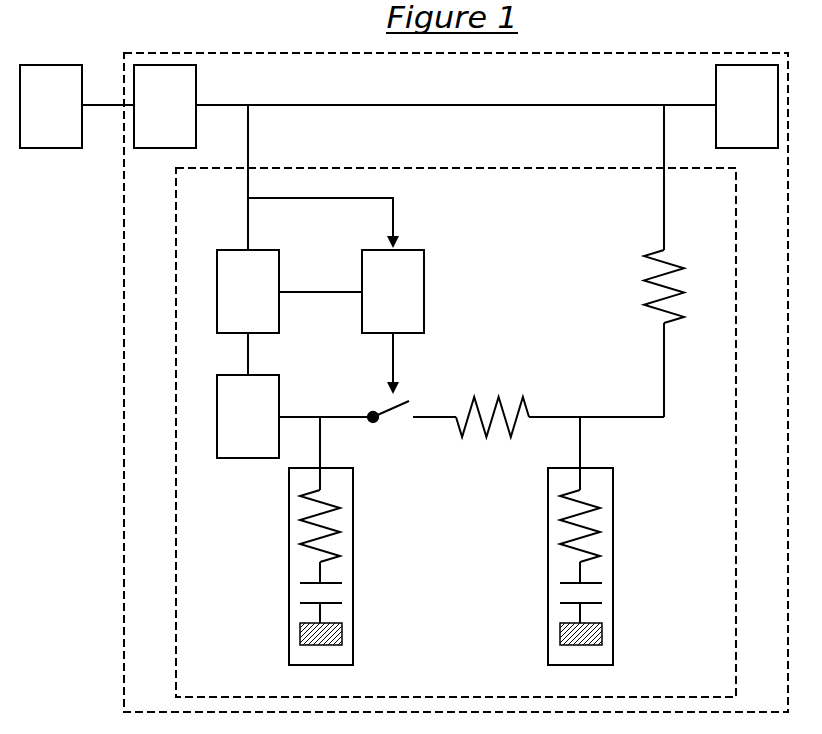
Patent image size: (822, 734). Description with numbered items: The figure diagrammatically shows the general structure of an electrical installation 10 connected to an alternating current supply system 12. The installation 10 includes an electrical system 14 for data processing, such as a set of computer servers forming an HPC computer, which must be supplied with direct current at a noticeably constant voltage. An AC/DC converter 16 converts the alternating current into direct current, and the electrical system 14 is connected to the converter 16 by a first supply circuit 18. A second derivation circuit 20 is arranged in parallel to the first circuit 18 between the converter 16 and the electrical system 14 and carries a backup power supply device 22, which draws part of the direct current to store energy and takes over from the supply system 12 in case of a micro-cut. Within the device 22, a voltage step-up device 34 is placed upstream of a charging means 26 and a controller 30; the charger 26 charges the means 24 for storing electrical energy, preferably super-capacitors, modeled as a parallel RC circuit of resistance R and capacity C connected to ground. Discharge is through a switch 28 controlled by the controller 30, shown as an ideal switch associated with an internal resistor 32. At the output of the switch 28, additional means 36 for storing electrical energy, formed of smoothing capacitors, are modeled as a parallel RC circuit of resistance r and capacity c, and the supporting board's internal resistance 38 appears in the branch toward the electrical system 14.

The electrical installation 10 is at (124, 355).
The alternating current supply system 12 is at (51, 106).
The electrical system for data processing 14 is at (747, 106).
The AC/DC converter 16 is at (165, 106).
The first supply circuit 18 is at (440, 105).
The second derivation circuit 20 is at (250, 125).
The backup power supply device 22 is at (150, 500).
The means for storing electrical energy 24 is at (322, 566).
The charging means 26 is at (248, 416).
The switch 28 is at (396, 428).
The controller 30 is at (393, 291).
The internal resistor 32 is at (496, 385).
The voltage step-up device 34 is at (248, 291).
The additional means for storing electrical energy 36 is at (583, 566).
The internal resistance 38 is at (630, 270).
The resistance R is at (316, 538).
The capacity C is at (316, 594).
The resistance r is at (576, 538).
The capacity c is at (576, 594).